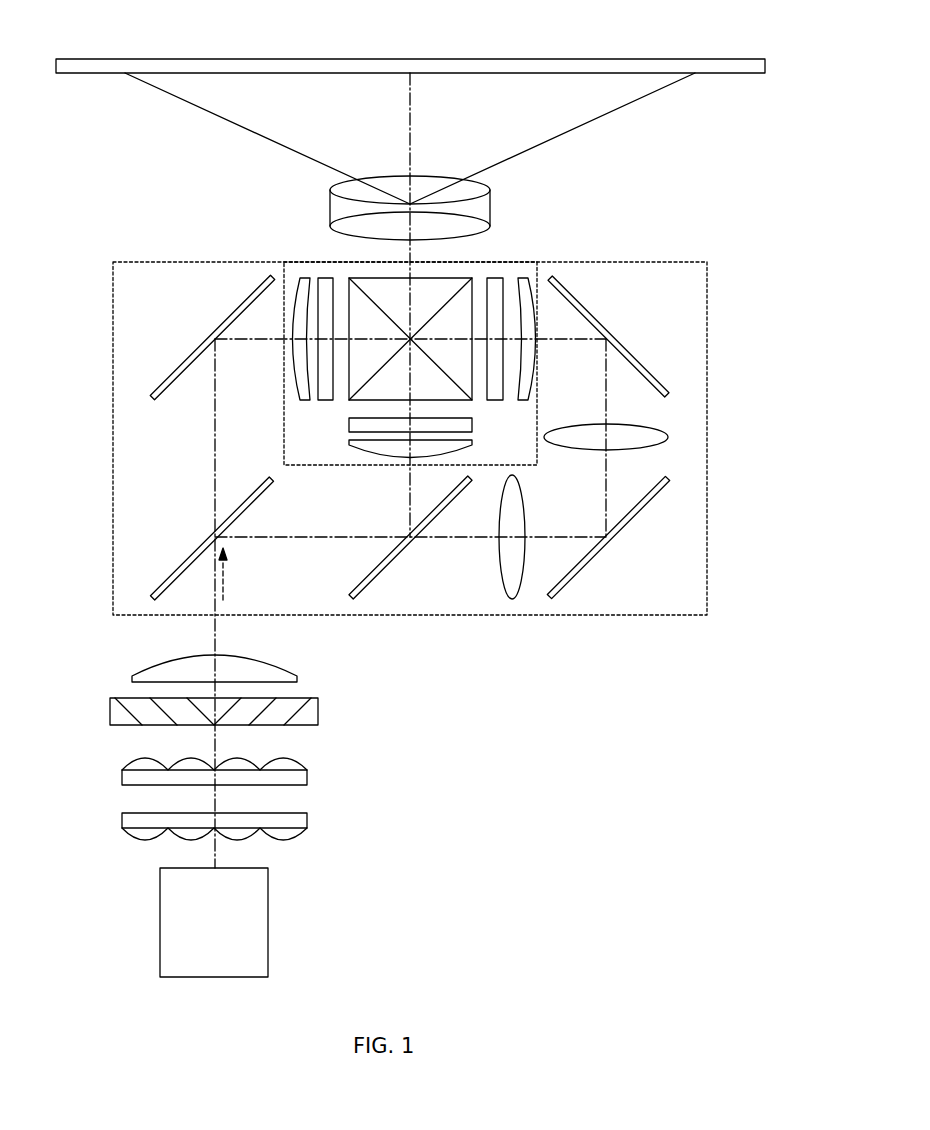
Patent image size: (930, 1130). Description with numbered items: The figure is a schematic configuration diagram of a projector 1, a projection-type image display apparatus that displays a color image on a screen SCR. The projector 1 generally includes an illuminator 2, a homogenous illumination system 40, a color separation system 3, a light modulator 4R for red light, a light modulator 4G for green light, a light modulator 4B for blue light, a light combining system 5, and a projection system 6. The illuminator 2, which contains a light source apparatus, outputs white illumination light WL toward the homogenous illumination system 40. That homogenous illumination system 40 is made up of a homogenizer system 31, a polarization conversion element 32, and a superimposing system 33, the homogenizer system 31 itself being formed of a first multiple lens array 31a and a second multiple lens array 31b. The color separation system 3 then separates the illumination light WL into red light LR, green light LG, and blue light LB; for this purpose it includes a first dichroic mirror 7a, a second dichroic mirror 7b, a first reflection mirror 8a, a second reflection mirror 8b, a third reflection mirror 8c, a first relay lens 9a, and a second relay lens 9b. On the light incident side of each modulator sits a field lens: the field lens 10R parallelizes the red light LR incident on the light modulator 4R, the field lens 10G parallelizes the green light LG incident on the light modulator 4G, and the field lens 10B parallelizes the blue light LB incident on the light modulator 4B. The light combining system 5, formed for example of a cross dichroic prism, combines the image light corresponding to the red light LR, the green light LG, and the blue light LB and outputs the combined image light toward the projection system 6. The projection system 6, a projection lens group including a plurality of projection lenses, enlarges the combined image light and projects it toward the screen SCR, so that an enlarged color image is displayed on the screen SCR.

The projector 1 is at (716, 239).
The illuminator 2 is at (268, 920).
The color separation system 3 is at (113, 389).
The light modulator for red light 4R is at (323, 276).
The light modulator for green light 4G is at (350, 425).
The light modulator for blue light 4B is at (494, 276).
The light combining system 5 is at (432, 282).
The projection system 6 is at (393, 186).
The first dichroic mirror 7a is at (182, 567).
The second dichroic mirror 7b is at (392, 565).
The first reflection mirror 8a is at (193, 356).
The second reflection mirror 8b is at (630, 523).
The third reflection mirror 8c is at (632, 355).
The first relay lens 9a is at (500, 553).
The second relay lens 9b is at (658, 430).
The field lens 10R is at (300, 276).
The field lens 10G is at (355, 447).
The field lens 10B is at (520, 276).
The homogenizer system 31 is at (392, 765).
The first multiple lens array 31a is at (307, 822).
The second multiple lens array 31b is at (307, 777).
The polarization conversion element 32 is at (318, 712).
The superimposing system 33 is at (285, 663).
The homogenous illumination system 40 is at (432, 647).
The screen SCR is at (735, 74).
The illumination light WL is at (228, 583).
The red light LR is at (213, 460).
The green light LG is at (409, 497).
The blue light LB is at (605, 491).